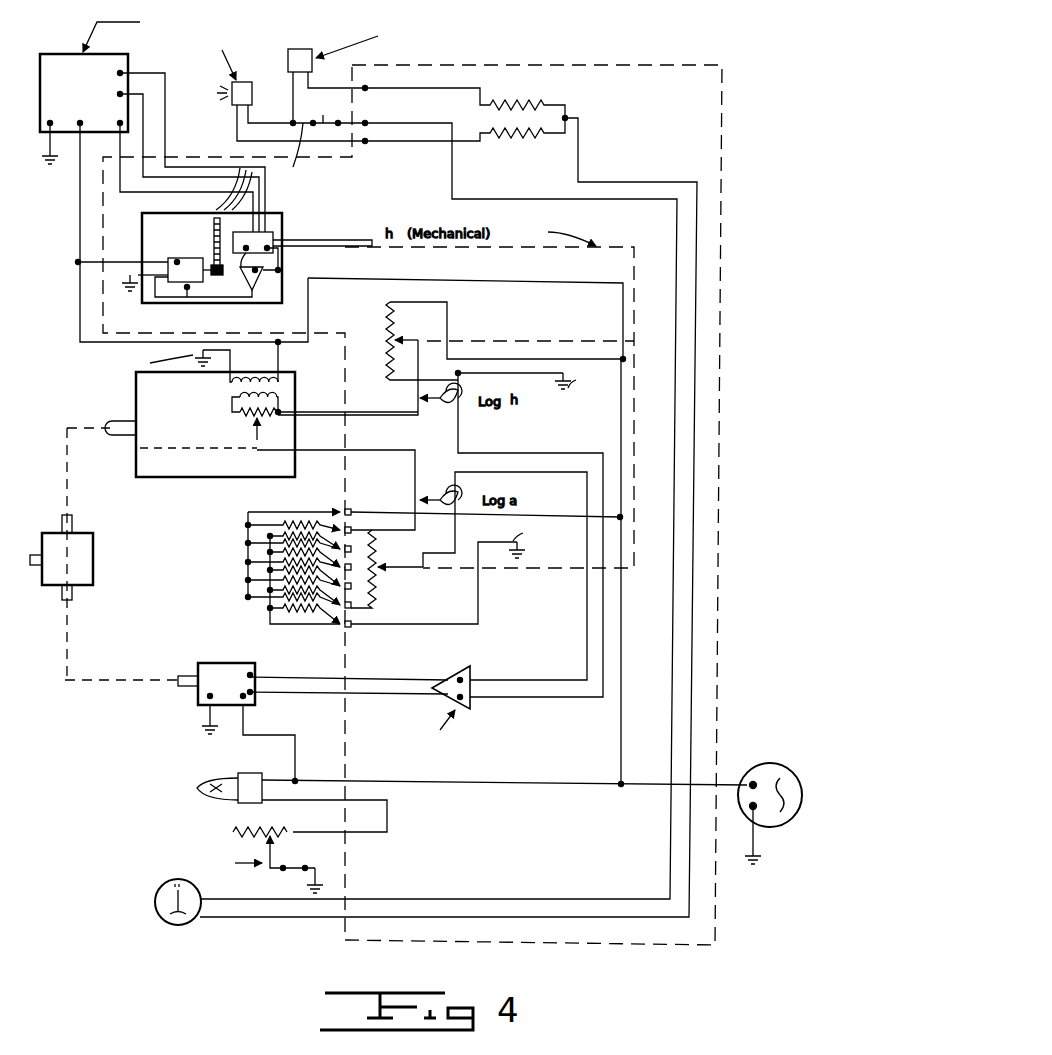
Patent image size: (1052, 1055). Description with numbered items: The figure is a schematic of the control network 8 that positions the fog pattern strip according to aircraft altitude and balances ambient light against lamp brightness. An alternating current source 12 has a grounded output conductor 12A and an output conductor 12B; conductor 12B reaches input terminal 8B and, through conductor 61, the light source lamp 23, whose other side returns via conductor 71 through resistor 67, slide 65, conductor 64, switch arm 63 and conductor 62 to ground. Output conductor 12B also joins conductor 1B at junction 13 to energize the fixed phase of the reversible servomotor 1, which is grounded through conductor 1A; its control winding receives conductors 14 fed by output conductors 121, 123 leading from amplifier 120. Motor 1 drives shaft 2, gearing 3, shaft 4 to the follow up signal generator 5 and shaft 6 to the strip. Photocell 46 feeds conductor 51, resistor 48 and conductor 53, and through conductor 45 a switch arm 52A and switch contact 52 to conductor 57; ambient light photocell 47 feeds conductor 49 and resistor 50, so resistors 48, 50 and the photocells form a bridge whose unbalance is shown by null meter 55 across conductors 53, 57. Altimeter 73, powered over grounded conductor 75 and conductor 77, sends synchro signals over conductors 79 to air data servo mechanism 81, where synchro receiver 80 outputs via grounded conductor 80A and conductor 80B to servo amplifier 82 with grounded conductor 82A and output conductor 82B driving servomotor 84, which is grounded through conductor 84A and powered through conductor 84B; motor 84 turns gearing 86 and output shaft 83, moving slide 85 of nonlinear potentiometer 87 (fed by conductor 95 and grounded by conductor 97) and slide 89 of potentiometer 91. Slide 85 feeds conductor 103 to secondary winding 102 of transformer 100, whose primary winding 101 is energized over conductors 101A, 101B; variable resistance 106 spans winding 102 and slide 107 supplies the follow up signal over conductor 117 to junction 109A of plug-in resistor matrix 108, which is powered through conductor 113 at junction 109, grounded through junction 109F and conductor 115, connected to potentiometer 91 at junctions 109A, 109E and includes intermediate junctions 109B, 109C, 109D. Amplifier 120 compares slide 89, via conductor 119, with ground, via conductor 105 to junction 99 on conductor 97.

The control network 8 is at (685, 66).
The altimeter 73 is at (60, 48).
The grounded conductor 75 is at (46, 152).
The conductor 77 is at (76, 264).
The conductors 79 is at (218, 192).
The ambient light responsive photocell 47 is at (254, 90).
The conductor 49 is at (235, 140).
The photocell 46 is at (304, 52).
The conductor 51 is at (325, 86).
The terminal 52A is at (317, 109).
The switch contact 52 is at (340, 122).
The conductor 45 is at (293, 151).
The resistor 48 is at (522, 104).
The resistor 50 is at (520, 136).
The conductor 53 is at (697, 292).
The conductor 57 is at (677, 362).
The air data servo mechanism 81 is at (212, 268).
The reversible servomotor 84 is at (186, 258).
The gearing 86 is at (213, 232).
The synchro receiver 80 is at (268, 233).
The grounded output conductor 80A is at (282, 260).
The output conductor 80B is at (231, 273).
The servo amplifier 82 is at (270, 288).
The grounded input-output conductor 82A is at (284, 274).
The output conductor 82B is at (190, 298).
The conductor 84A is at (152, 292).
The conductor 84B is at (126, 262).
The output shaft 83 is at (330, 240).
The conductor 95 is at (520, 358).
The nonlinear potentiometer 87 is at (384, 332).
The slide 85 is at (406, 340).
The conductor 97 is at (392, 374).
The junction 99 is at (463, 373).
The conductor 105 is at (541, 453).
The follow up signal generator 5 is at (128, 398).
The primary winding 101 is at (255, 378).
The conductor 101A is at (200, 353).
The conductor 101B is at (291, 351).
The secondary winding 102 is at (240, 400).
The transformer 100 is at (228, 386).
The variable resistance 106 is at (262, 418).
The slide 107 is at (257, 440).
The conductor 103 is at (306, 412).
The conductor 117 is at (414, 486).
The conductor 113 is at (376, 512).
The resistor matrix 108 is at (247, 574).
The junction 109 is at (336, 512).
The junction 109A is at (326, 525).
The junction 109B is at (326, 543).
The junction 109C is at (326, 561).
The junction 109D is at (326, 580).
The junction 109E is at (326, 612).
The junction 109F is at (339, 629).
The slide 89 is at (386, 573).
The potentiometer 91 is at (382, 602).
The conductor 115 is at (478, 608).
The conductor 119 is at (587, 657).
The amplifier 120 is at (458, 668).
The amplifier output lead 121 is at (408, 676).
The amplifier output lead 123 is at (383, 696).
The conductors 14 is at (284, 680).
The reversible servomotor 1 is at (195, 702).
The shaft 2 is at (184, 676).
The grounded conductor 1A is at (196, 718).
The conductor 1B is at (268, 736).
The junction 13 is at (297, 781).
The conductor 61 is at (400, 781).
The light source lamp 23 is at (202, 784).
The conductor 71 is at (402, 820).
The resistor 67 is at (232, 832).
The slide 65 is at (284, 842).
The conductor 64 is at (266, 870).
The switch arm 63 is at (303, 870).
The conductor 62 is at (330, 875).
The null meter 55 is at (170, 924).
The gearing 3 is at (60, 588).
The shaft 4 is at (120, 437).
The shaft 6 is at (33, 552).
The source of alternating current 12 is at (792, 770).
The output conductor 12B is at (728, 783).
The grounded output conductor 12A is at (757, 840).
The input terminal 8B is at (615, 791).